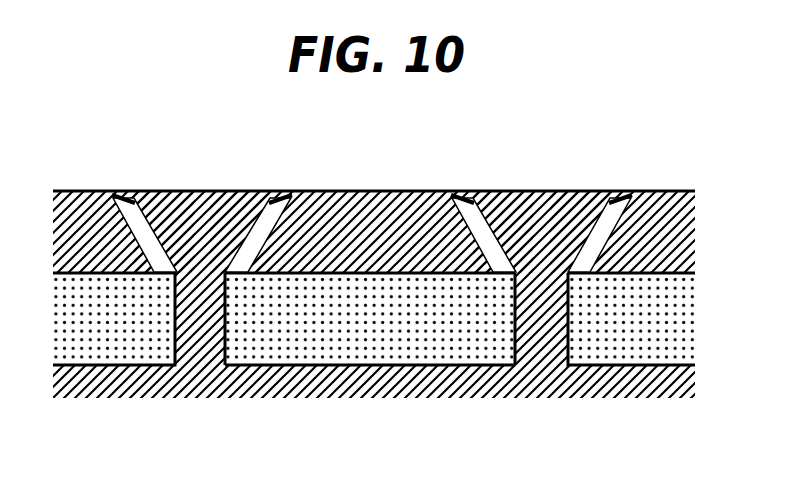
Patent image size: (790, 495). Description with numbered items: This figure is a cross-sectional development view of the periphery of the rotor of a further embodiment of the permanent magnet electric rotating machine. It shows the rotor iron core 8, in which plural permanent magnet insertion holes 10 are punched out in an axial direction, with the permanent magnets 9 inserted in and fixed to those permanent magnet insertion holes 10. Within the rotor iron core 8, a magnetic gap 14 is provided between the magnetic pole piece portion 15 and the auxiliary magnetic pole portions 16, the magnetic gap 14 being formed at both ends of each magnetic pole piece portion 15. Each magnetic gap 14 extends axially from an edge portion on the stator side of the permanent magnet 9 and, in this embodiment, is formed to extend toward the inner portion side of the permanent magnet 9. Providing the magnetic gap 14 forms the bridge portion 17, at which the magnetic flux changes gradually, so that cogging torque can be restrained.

The rotor iron core 8 is at (374, 308).
The permanent magnet 9 is at (390, 357).
The permanent magnet insertion hole 10 is at (290, 369).
The magnetic gap 14 is at (132, 199).
The magnetic pole piece portion 15 is at (82, 200).
The auxiliary magnetic pole portion 16 is at (207, 200).
The bridge portion 17 is at (175, 200).